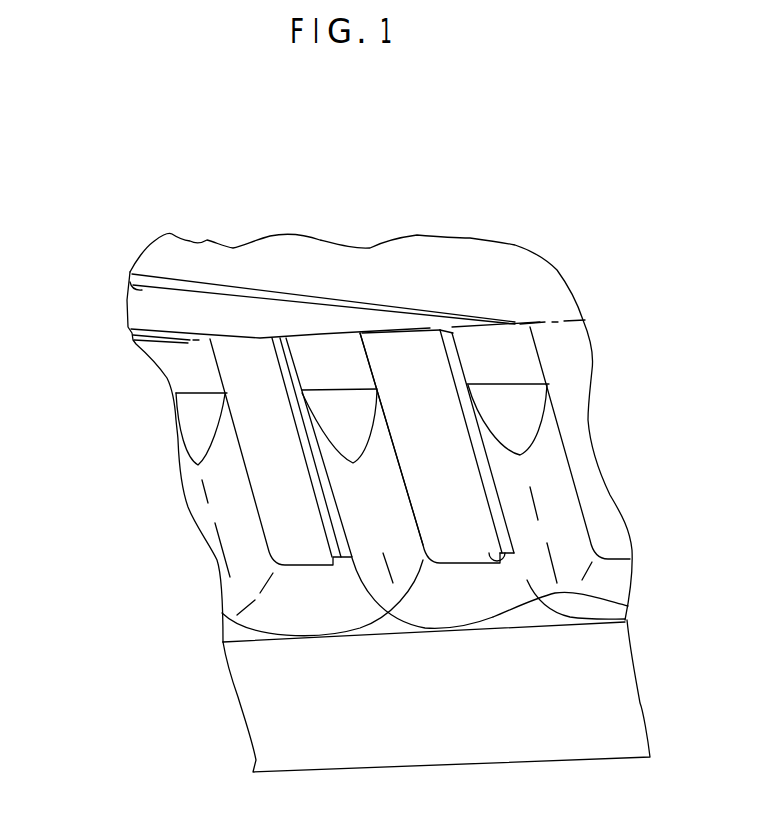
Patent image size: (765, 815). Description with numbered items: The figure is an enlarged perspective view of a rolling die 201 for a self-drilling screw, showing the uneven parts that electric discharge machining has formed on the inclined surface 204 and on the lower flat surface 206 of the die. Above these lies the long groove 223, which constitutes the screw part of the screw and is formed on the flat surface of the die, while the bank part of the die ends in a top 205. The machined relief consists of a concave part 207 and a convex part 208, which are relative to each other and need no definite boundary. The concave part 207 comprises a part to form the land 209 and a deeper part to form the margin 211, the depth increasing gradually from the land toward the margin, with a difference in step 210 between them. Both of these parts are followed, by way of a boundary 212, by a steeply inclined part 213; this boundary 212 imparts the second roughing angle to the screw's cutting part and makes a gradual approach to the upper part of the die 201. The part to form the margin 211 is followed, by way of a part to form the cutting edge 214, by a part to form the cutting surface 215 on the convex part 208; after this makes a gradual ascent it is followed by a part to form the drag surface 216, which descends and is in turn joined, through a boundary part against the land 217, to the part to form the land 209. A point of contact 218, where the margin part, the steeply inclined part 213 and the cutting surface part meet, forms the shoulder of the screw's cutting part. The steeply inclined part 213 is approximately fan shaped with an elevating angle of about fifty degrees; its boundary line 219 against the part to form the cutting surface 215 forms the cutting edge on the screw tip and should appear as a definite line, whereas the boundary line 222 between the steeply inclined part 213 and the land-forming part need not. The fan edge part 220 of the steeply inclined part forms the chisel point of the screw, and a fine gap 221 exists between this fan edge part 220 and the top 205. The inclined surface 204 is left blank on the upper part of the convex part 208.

The die 201 is at (237, 697).
The inclined surface 204 is at (340, 412).
The top 205 is at (243, 652).
The lower flat surface 206 is at (177, 368).
The concave part 207 is at (392, 353).
The convex part 208 is at (353, 528).
The part to form the land 209 is at (445, 425).
The difference in step 210 is at (445, 338).
The part to form the margin 211 is at (480, 413).
The boundary 212 is at (468, 565).
The steeply inclined part 213 is at (497, 618).
The part to form the cutting edge 214 is at (486, 464).
The part to form the cutting surface 215 is at (540, 523).
The part to form the drag surface 216 is at (370, 473).
The boundary part against the land 217 is at (381, 418).
The point of contact 218 is at (487, 547).
The boundary line 219 is at (628, 606).
The fan edge part 220 is at (537, 630).
The fine gap 221 is at (453, 630).
The boundary line 222 is at (408, 594).
The long groove 223 is at (133, 291).